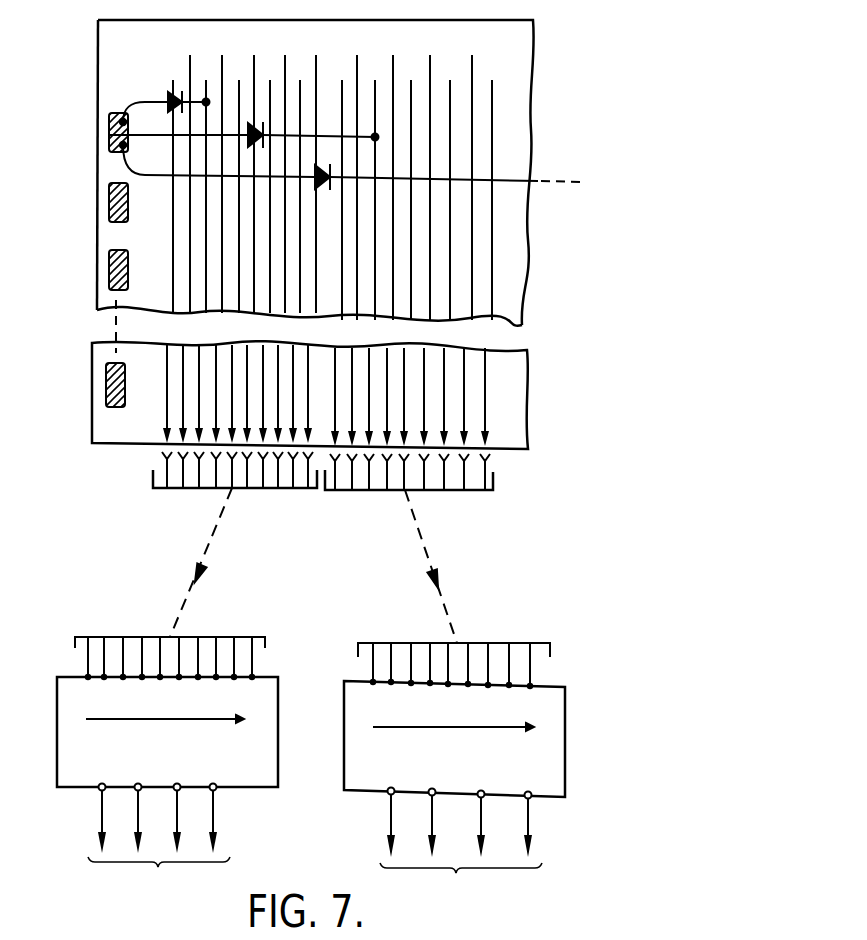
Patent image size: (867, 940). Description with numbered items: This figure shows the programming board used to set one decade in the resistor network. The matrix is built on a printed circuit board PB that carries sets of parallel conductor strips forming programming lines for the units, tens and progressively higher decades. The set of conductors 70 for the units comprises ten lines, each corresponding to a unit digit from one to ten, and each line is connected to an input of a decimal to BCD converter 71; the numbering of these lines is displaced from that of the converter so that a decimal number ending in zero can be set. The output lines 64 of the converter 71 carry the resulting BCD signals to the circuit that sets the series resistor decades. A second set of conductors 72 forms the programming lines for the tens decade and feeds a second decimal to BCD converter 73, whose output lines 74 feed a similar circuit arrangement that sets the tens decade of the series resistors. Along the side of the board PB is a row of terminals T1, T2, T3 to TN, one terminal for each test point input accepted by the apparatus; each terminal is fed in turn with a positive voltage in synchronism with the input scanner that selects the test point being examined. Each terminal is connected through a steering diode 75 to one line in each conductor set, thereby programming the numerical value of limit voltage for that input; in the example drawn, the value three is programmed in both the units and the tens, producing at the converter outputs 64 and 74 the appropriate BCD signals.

The printed circuit board PB is at (114, 33).
The terminal T1 is at (109, 135).
The terminal T2 is at (109, 206).
The terminal T3 is at (109, 270).
The terminal TN is at (106, 383).
The set of conductors 70 is at (200, 398).
The decimal to BCD converter 71 is at (65, 736).
The second set of conductors 72 is at (468, 238).
The second decimal to BCD converter 73 is at (556, 713).
The output lines 74 is at (461, 848).
The steering diode 75 is at (168, 96).
The output lines 64 is at (161, 843).